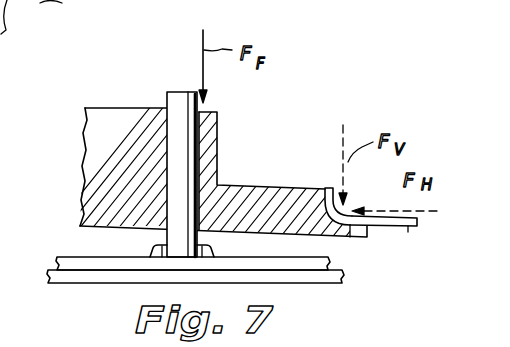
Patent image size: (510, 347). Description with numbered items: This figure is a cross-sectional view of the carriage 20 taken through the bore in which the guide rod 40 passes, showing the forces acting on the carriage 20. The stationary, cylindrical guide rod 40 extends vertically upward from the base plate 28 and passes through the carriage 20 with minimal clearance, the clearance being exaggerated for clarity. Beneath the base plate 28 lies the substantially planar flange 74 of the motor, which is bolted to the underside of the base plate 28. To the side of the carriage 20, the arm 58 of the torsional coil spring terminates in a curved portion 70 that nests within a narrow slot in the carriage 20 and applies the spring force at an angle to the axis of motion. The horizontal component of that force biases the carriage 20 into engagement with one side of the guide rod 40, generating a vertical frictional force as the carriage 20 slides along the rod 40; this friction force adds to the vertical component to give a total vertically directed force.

The carriage 20 is at (88, 158).
The guide rod 40 is at (168, 98).
The curved portion 70 is at (327, 188).
The arm 58 is at (407, 227).
The base plate 28 is at (72, 257).
The flange 74 is at (325, 284).